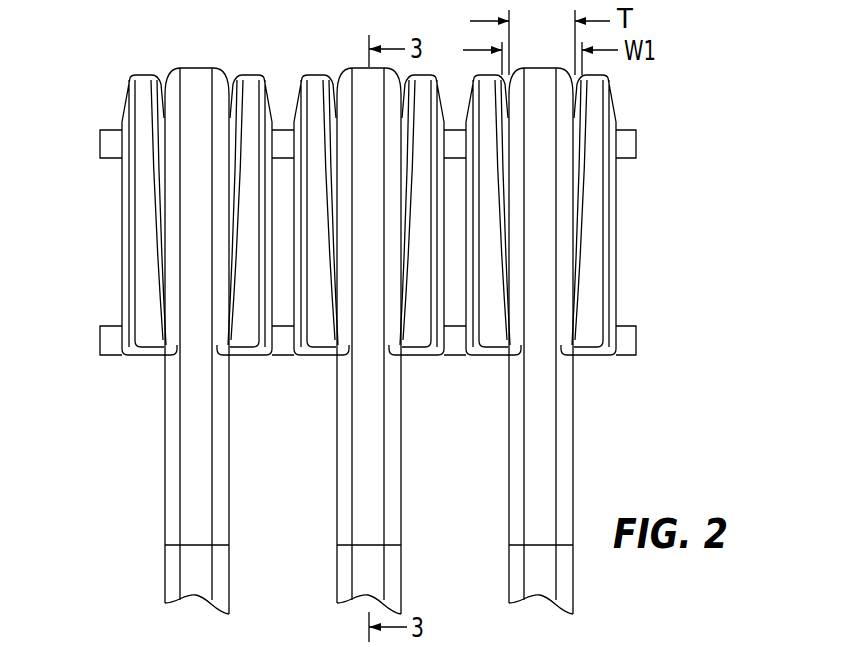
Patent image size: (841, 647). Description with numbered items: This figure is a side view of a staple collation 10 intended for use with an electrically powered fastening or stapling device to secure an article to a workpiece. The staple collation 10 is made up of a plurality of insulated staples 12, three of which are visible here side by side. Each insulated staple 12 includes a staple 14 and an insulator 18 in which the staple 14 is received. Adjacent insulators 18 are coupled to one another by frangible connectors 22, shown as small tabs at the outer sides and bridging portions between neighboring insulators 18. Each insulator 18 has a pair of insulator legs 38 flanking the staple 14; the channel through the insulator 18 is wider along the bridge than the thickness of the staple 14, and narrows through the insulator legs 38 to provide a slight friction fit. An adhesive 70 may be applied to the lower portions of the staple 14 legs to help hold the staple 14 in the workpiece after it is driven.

The staple collation 10 is at (387, 341).
The insulated staple 12 is at (375, 215).
The staple 14 is at (197, 435).
The insulator 18 is at (153, 308).
The frangible connector 22 is at (102, 147).
The insulator leg 38 is at (150, 228).
The adhesive 70 is at (190, 568).